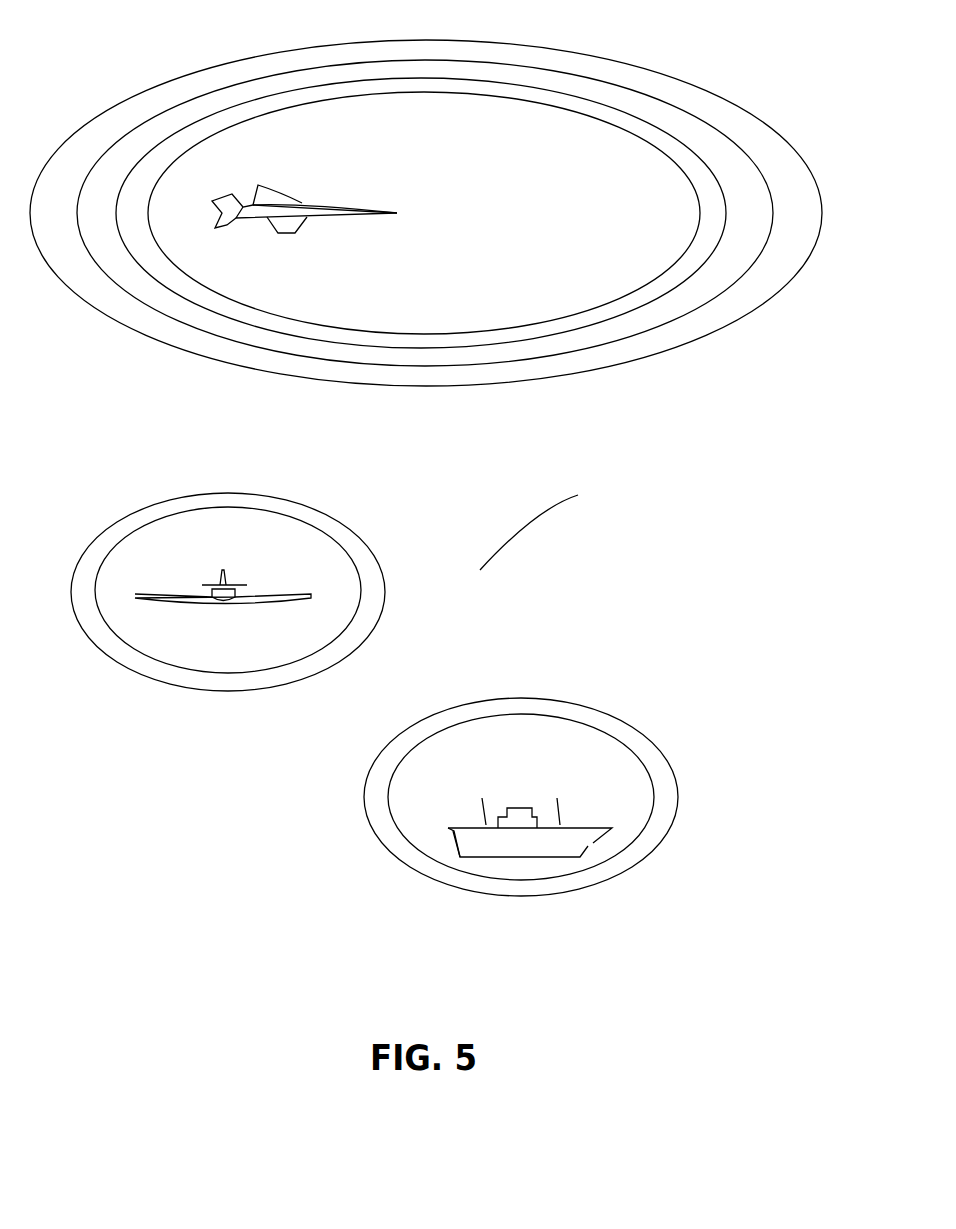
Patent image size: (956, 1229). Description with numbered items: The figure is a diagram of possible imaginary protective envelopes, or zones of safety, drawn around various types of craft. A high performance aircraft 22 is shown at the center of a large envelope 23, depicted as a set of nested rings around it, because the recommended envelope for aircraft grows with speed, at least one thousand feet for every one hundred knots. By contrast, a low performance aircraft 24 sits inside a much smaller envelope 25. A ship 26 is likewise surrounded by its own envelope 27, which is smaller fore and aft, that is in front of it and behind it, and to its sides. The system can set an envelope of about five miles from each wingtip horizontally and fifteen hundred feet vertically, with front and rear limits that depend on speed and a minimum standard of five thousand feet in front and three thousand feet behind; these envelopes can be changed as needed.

The high performance aircraft 22 is at (318, 198).
The large envelope 23 is at (688, 77).
The low performance aircraft 24 is at (270, 585).
The smaller envelope 25 is at (325, 509).
The ship 26 is at (590, 820).
The envelope 27 is at (607, 708).